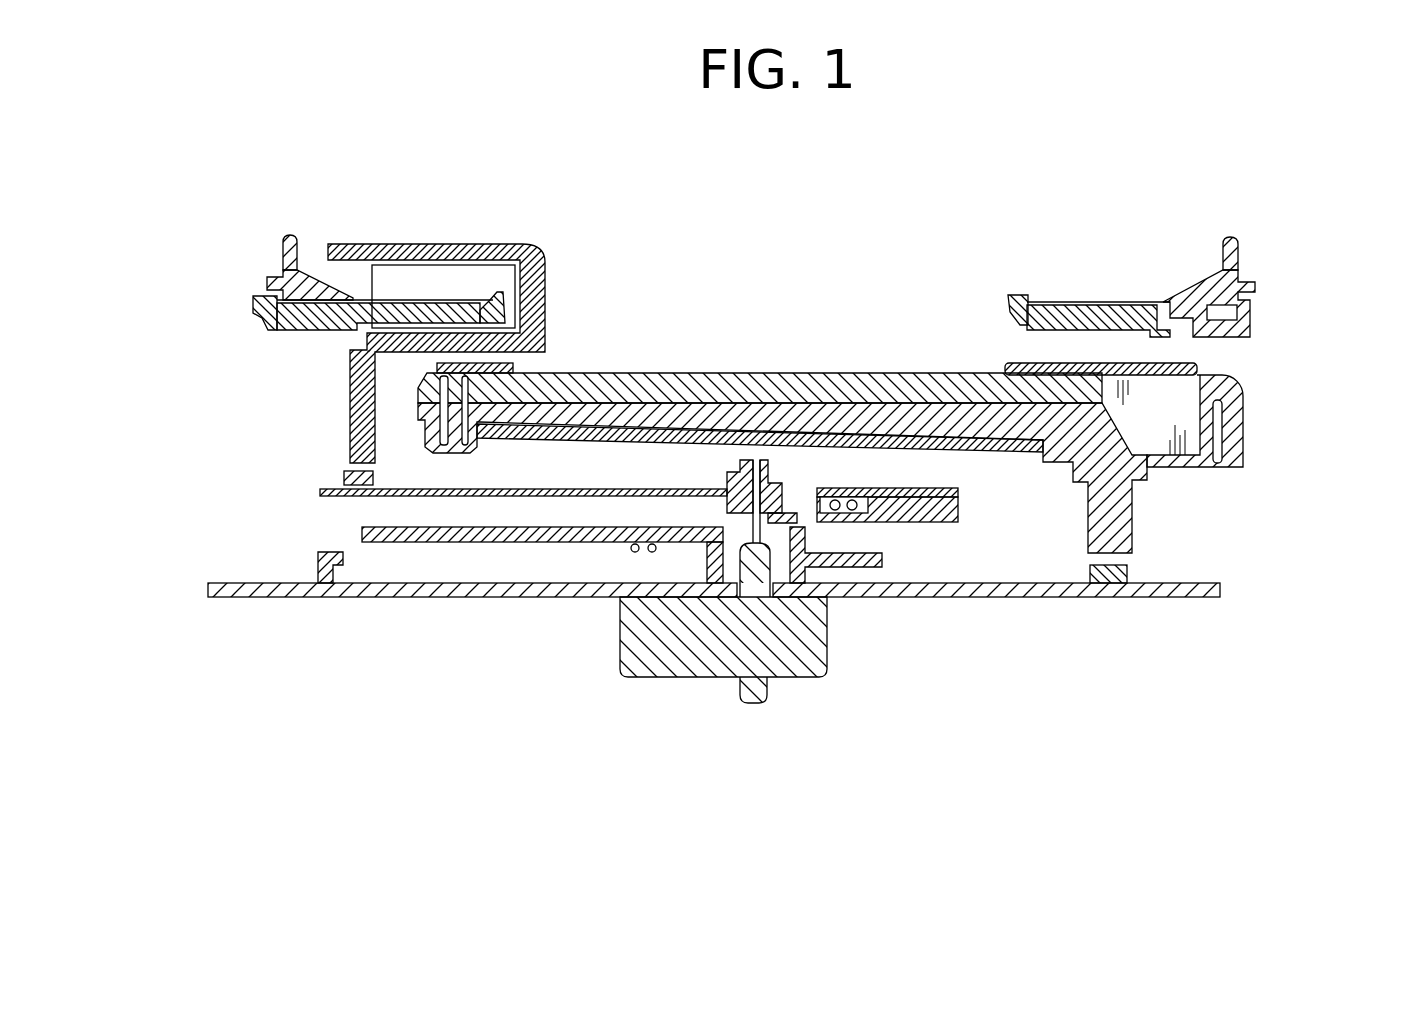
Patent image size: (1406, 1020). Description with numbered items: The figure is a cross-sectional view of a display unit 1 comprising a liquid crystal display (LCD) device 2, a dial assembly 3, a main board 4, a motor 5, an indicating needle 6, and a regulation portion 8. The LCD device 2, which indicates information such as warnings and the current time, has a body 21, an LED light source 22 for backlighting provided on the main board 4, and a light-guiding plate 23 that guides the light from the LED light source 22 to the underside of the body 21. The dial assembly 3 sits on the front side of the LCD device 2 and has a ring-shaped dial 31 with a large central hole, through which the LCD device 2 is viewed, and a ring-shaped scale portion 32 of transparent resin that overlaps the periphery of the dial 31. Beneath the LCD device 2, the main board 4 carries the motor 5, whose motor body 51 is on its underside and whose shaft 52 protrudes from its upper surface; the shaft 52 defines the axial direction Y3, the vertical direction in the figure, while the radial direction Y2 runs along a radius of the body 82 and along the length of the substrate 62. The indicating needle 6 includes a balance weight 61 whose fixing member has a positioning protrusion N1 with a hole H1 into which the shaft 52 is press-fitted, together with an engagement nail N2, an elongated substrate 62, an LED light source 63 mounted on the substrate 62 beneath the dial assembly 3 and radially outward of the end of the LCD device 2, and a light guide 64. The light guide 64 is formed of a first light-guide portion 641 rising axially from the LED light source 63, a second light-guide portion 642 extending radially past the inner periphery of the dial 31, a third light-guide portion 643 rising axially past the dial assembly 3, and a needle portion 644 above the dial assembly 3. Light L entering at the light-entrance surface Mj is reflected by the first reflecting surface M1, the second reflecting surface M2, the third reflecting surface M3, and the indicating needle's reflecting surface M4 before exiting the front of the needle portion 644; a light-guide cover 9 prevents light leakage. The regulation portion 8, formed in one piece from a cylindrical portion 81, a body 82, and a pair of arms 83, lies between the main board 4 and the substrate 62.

The display unit 1 is at (1242, 204).
The liquid crystal display (LCD) device 2 is at (830, 390).
The dial assembly 3 is at (789, 244).
The main board 4 is at (1100, 600).
The motor 5 is at (722, 612).
The indicating needle 6 is at (594, 448).
The regulation portion 8 is at (630, 613).
The light-guide cover 9 is at (530, 362).
The body 21 is at (917, 387).
The LED light source 22 is at (1127, 570).
The light-guiding plate 23 is at (1116, 515).
The dial 31 is at (377, 300).
The ring-shaped scale portion 32 is at (310, 283).
The motor body 51 is at (800, 660).
The shaft 52 is at (752, 517).
The balance weight 61 is at (958, 512).
The substrate 62 is at (334, 507).
The LED light source 63 is at (344, 478).
The light guide 64 is at (393, 278).
The cylindrical portion 81 is at (693, 598).
The body 82 is at (850, 557).
The arms 83 is at (480, 528).
The first light-guide portion 641 is at (347, 380).
The second light-guide portion 642 is at (430, 340).
The third light-guide portion 643 is at (543, 290).
The needle portion 644 is at (420, 250).
The first reflecting surface M1 is at (350, 352).
The second reflecting surface M2 is at (527, 336).
The third reflecting surface M3 is at (543, 250).
The indicating needle's reflecting surface M4 is at (355, 209).
The light-entrance surface Mj is at (350, 448).
The light L is at (540, 282).
The hole H1 is at (767, 460).
The positioning protrusion N1 is at (730, 470).
The engagement nail N2 is at (790, 513).
The radial direction Y2 is at (521, 857).
The axial direction Y3 is at (1318, 485).